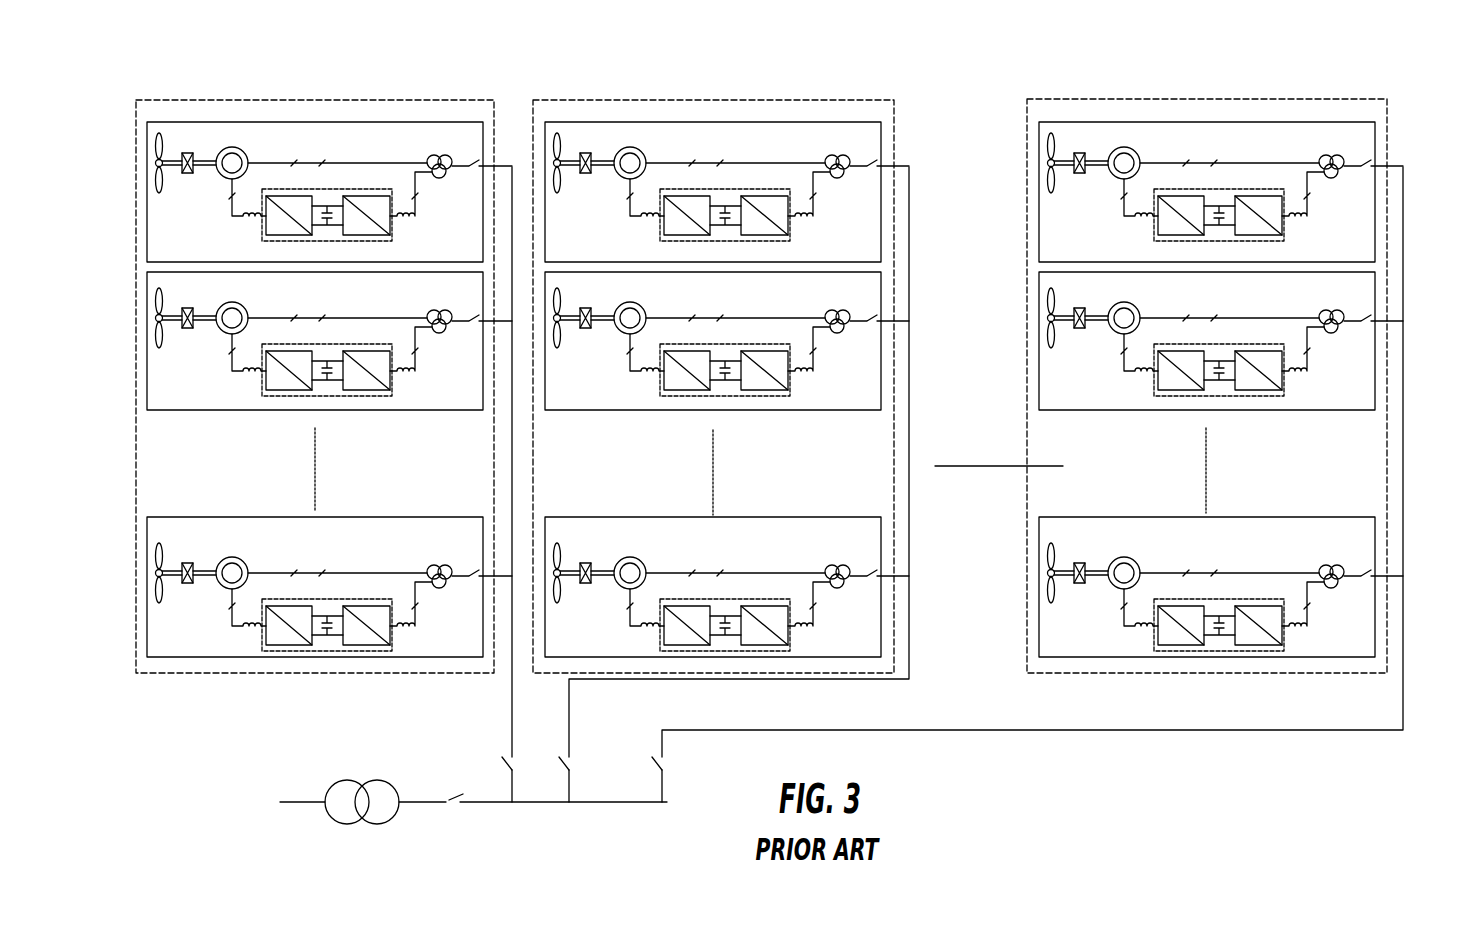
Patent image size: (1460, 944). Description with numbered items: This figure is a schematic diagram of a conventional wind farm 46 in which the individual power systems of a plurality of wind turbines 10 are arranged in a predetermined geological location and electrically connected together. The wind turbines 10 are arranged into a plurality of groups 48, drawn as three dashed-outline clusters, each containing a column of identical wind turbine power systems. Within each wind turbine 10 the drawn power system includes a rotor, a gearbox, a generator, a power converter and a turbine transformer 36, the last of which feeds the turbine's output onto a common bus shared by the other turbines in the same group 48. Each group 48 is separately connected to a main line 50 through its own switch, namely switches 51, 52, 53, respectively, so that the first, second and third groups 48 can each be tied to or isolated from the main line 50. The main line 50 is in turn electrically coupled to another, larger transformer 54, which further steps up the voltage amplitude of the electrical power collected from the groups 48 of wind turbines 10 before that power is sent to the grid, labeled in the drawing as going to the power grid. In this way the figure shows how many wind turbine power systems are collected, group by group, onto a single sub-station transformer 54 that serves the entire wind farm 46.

The wind turbine 10 is at (147, 210).
The turbine transformer 36 is at (868, 356).
The wind farm 46 is at (1422, 155).
The group 48 is at (208, 675).
The main line 50 is at (635, 803).
The switch 51 is at (500, 762).
The switch 52 is at (560, 762).
The switch 53 is at (647, 762).
The transformer 54 is at (360, 775).